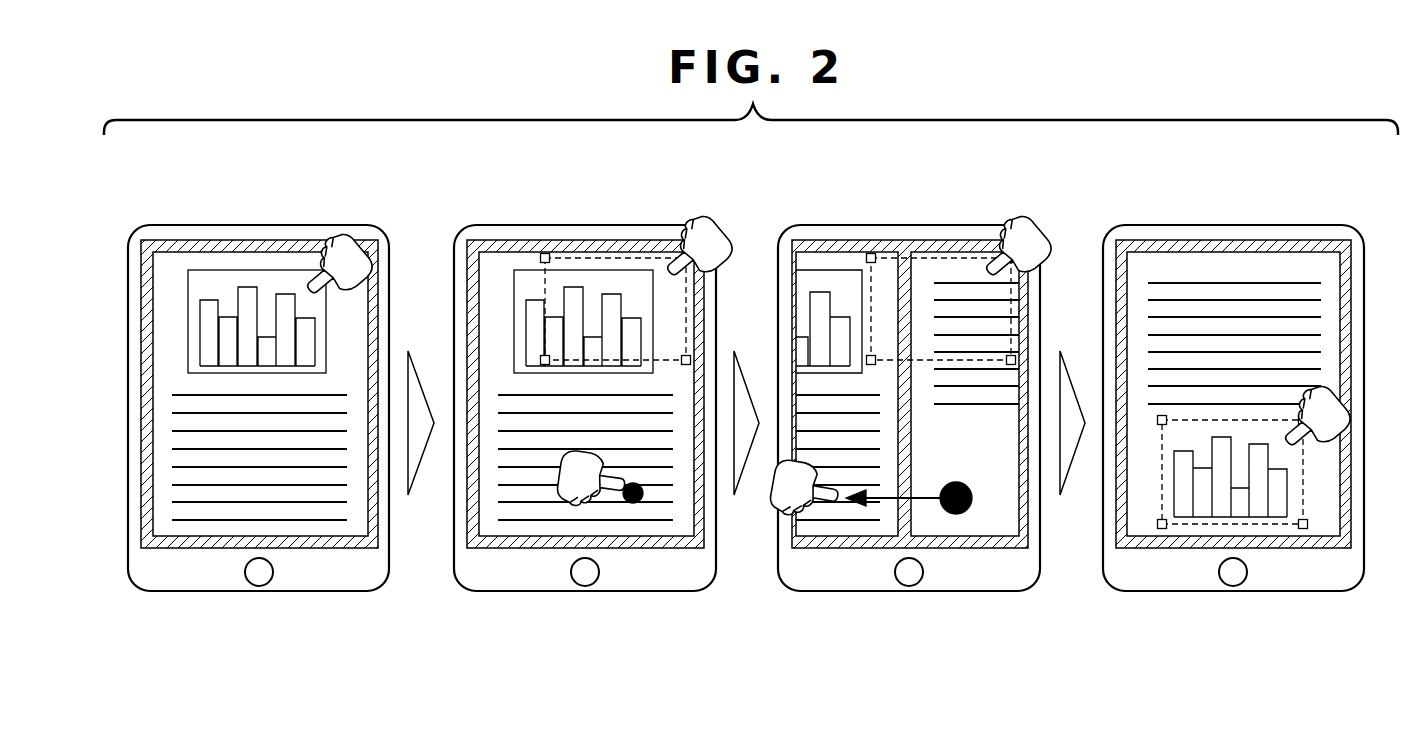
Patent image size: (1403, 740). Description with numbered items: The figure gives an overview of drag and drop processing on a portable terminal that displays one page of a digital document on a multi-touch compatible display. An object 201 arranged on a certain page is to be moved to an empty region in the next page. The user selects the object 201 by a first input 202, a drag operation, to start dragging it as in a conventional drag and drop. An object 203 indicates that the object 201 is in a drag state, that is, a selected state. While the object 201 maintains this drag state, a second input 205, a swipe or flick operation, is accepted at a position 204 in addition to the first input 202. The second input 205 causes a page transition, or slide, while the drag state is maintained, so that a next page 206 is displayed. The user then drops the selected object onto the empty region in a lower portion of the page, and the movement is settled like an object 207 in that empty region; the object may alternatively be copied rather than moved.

The object 201 is at (229, 269).
The first input 202 is at (326, 236).
The object in drag state 203 is at (596, 258).
The position 204 is at (633, 503).
The second input 205 is at (897, 499).
The next page 206 is at (1222, 238).
The object 207 is at (1259, 507).